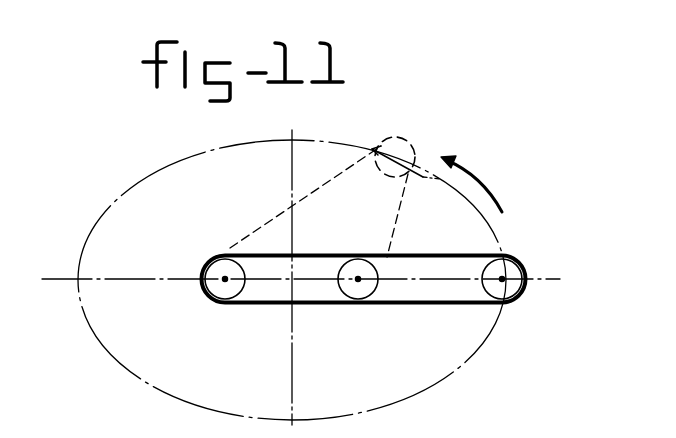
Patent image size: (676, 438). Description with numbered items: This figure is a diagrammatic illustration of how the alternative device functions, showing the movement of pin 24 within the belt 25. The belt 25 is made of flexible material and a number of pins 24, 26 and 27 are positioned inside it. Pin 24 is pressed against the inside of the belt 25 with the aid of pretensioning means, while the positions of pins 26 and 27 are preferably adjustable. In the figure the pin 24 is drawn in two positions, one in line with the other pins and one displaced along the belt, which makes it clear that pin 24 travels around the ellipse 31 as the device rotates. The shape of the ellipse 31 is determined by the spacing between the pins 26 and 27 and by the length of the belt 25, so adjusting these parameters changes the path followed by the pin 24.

The pin 24 is at (394, 138).
The belt 25 is at (250, 237).
The pin 26 is at (355, 292).
The pin 27 is at (228, 292).
The ellipse 31 is at (93, 219).